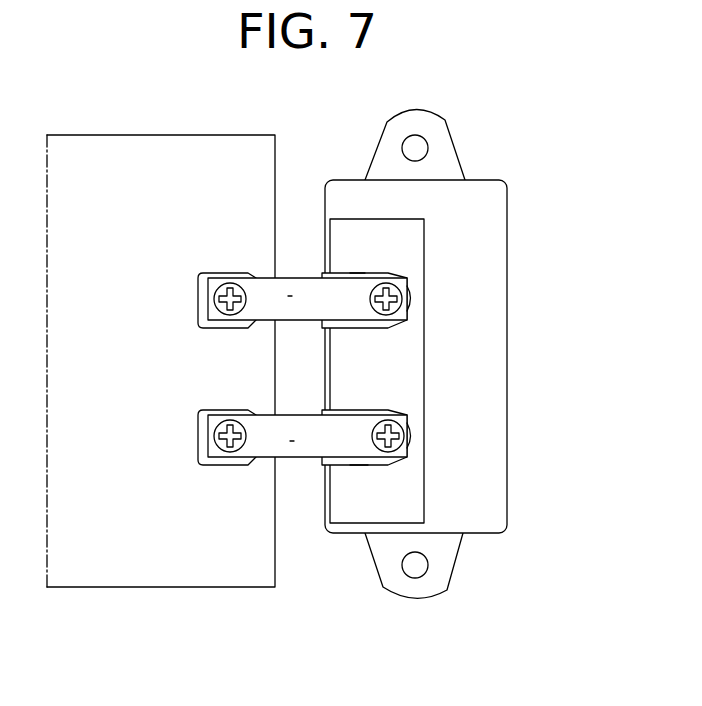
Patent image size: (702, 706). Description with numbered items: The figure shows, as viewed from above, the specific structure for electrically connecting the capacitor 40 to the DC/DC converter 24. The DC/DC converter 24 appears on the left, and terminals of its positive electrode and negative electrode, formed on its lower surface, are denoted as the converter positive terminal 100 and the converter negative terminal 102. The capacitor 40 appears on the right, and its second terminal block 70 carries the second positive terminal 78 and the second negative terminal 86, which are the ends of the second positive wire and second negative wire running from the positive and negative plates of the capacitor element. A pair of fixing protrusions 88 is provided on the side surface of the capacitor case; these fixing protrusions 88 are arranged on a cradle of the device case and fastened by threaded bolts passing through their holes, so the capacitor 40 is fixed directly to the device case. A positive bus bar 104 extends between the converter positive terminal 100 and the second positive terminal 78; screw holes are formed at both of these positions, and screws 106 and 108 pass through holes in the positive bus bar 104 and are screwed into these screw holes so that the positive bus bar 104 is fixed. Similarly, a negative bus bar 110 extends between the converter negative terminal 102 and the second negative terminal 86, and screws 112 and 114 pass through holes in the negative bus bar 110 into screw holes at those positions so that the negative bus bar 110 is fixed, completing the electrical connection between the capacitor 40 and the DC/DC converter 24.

The DC/DC converter 24 is at (133, 178).
The capacitor 40 is at (490, 232).
The second terminal block 70 is at (398, 363).
The second positive terminal 78 is at (359, 273).
The second negative terminal 86 is at (360, 462).
The fixing protrusion 88 is at (443, 152).
The converter positive terminal 100 is at (205, 290).
The converter negative terminal 102 is at (205, 428).
The positive bus bar 104 is at (290, 295).
The screw 106 is at (222, 285).
The screw 108 is at (398, 290).
The negative bus bar 110 is at (292, 441).
The screw 112 is at (222, 455).
The screw 114 is at (400, 432).